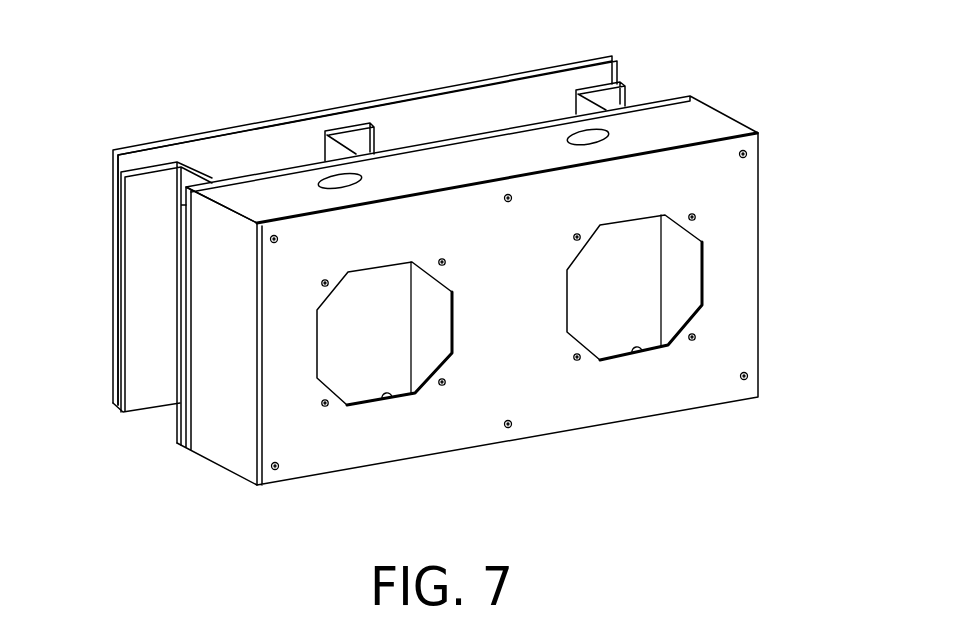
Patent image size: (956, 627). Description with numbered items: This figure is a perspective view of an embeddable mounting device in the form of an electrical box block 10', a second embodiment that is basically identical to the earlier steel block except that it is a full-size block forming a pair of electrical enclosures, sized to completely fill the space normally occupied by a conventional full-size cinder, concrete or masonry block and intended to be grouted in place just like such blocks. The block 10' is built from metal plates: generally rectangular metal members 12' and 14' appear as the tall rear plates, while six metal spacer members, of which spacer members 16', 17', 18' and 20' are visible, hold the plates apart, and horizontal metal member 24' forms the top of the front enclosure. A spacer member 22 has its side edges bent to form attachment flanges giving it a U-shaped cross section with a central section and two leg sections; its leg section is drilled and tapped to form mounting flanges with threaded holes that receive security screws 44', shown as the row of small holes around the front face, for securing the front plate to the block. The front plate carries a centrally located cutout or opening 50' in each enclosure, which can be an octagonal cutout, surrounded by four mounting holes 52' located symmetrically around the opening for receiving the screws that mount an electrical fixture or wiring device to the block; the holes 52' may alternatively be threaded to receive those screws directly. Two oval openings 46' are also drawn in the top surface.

The mounting device or steel block 10' is at (87, 89).
The rectangular metal member 12' is at (365, 220).
The rectangular metal member 14' is at (365, 212).
The metal spacer member 16' is at (183, 251).
The metal spacer member 17' is at (367, 85).
The metal spacer member 18' is at (653, 78).
The metal spacer member 20' is at (192, 344).
The spacer member 22 is at (758, 240).
The horizontal metal member 24' is at (472, 111).
The security screws 44' is at (563, 330).
The openings 46' is at (507, 150).
The cutout or opening 50' is at (509, 329).
The mounting holes 52' is at (503, 310).